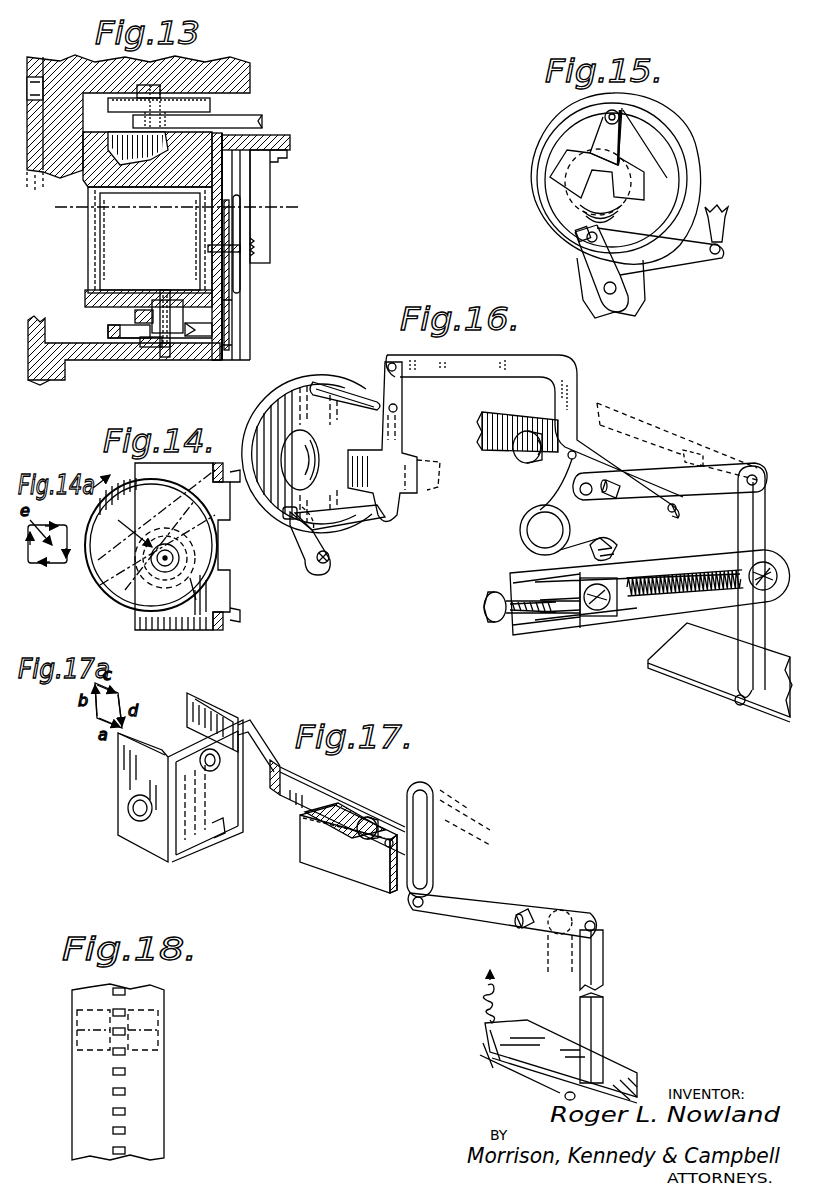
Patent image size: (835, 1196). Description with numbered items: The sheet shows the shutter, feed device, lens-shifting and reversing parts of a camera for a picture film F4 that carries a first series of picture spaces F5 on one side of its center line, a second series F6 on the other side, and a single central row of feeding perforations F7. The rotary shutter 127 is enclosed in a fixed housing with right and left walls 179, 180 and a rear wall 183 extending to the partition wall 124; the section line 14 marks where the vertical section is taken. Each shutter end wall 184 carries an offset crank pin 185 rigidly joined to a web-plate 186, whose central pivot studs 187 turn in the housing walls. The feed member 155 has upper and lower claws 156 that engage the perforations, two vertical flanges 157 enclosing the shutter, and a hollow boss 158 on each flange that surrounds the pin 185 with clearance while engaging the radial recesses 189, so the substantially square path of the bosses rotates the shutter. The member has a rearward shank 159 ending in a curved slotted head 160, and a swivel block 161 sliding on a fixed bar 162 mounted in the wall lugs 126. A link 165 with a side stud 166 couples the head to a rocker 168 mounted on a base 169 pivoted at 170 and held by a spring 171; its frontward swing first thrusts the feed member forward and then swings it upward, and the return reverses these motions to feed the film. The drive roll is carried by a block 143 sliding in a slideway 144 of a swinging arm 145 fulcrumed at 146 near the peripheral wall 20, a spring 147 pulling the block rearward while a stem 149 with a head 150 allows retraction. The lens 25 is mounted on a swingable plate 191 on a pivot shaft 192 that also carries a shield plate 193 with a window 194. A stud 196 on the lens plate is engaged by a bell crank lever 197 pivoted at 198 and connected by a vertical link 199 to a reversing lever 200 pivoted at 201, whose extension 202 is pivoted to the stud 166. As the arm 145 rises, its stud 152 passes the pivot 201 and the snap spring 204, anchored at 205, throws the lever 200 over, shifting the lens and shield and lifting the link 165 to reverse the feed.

In FIG. 13, the section line 14 is at (182, 207).
In FIG. 13, the peripheral wall 20 is at (57, 383).
In FIG. 15, the peripheral wall 20 is at (697, 183).
In FIG. 15, the lens 25 is at (610, 198).
In FIG. 16, the lens 25 is at (300, 460).
In FIG. 13, the partition wall 124 is at (290, 141).
In FIG. 17, the partition wall 124 is at (345, 865).
In FIG. 17, the wall lugs 126 is at (318, 842).
In FIG. 13, the rotary shutter 127 is at (88, 235).
In FIG. 14, the rotary shutter 127 is at (105, 598).
In FIG. 16, the block 143 is at (603, 610).
In FIG. 16, the slideway 144 is at (572, 618).
In FIG. 16, the swinging arm or carrier 145 is at (533, 640).
In FIG. 16, the fulcrum 146 is at (770, 590).
In FIG. 16, the spring 147 is at (622, 612).
In FIG. 16, the stem 149 is at (500, 616).
In FIG. 16, the head or button 150 is at (484, 610).
In FIG. 16, the stud 152 is at (618, 545).
In FIG. 17, the feed member 155 is at (188, 850).
In FIG. 13, the claws 156 is at (210, 247).
In FIG. 14, the claws 156 is at (238, 605).
In FIG. 17, the claws 156 is at (224, 835).
In FIG. 13, the vertical flanges 157 is at (135, 318).
In FIG. 14, the vertical flanges 157 is at (185, 617).
In FIG. 17, the vertical flanges 157 is at (218, 710).
In FIG. 13, the sleeve or hollow boss 158 is at (172, 330).
In FIG. 14, the sleeve or hollow boss 158 is at (190, 520).
In FIG. 17, the sleeve or hollow boss 158 is at (128, 810).
In FIG. 13, the shank 159 is at (240, 120).
In FIG. 16, the shank 159 is at (482, 428).
In FIG. 14, the shank 159 is at (196, 600).
In FIG. 17, the shank 159 is at (315, 780).
In FIG. 17, the curved slotted head 160 is at (430, 862).
In FIG. 16, the swivel block or lug 161 is at (520, 458).
In FIG. 17, the swivel block or lug 161 is at (372, 818).
In FIG. 17, the fixed bar 162 is at (322, 845).
In FIG. 16, the link 165 is at (735, 442).
In FIG. 17, the link 165 is at (455, 795).
In FIG. 16, the stud 166 is at (626, 490).
In FIG. 17, the stud 166 is at (518, 930).
In FIG. 16, the reciprocating member 168 is at (766, 538).
In FIG. 17, the reciprocating member 168 is at (603, 1003).
In FIG. 16, the base 169 is at (720, 672).
In FIG. 17, the base 169 is at (615, 1065).
In FIG. 16, the pivot 170 is at (734, 704).
In FIG. 17, the pivot 170 is at (562, 1096).
In FIG. 17, the spring 171 is at (484, 1008).
In FIG. 13, the right wall 179 is at (242, 80).
In FIG. 13, the left wall 180 is at (95, 360).
In FIG. 13, the rear wall 183 is at (225, 160).
In FIG. 13, the shutter end wall 184 is at (88, 298).
In FIG. 13, the offset pin 185 is at (185, 116).
In FIG. 14, the offset pin 185 is at (142, 592).
In FIG. 13, the web-plate 186 is at (118, 106).
In FIG. 14, the web-plate 186 is at (120, 555).
In FIG. 13, the pivot studs 187 is at (152, 357).
In FIG. 13, the radial recess 189 is at (215, 328).
In FIG. 14, the radial recess 189 is at (150, 600).
In FIG. 15, the swingable plate 191 is at (573, 128).
In FIG. 16, the swingable plate 191 is at (285, 398).
In FIG. 15, the pivot shaft 192 is at (620, 114).
In FIG. 16, the pivot shaft 192 is at (352, 384).
In FIG. 13, the shield plate 193 is at (235, 190).
In FIG. 15, the shield plate 193 is at (608, 138).
In FIG. 16, the shield plate 193 is at (362, 450).
In FIG. 15, the window 194 is at (588, 198).
In FIG. 15, the stud 196 is at (590, 240).
In FIG. 16, the stud 196 is at (287, 521).
In FIG. 15, the bell crank lever 197 is at (687, 267).
In FIG. 16, the bell crank lever 197 is at (348, 542).
In FIG. 15, the pivot 198 is at (604, 288).
In FIG. 16, the pivot 198 is at (322, 564).
In FIG. 15, the vertical link 199 is at (728, 220).
In FIG. 16, the vertical link 199 is at (389, 362).
In FIG. 16, the reversing lever 200 is at (553, 352).
In FIG. 16, the fulcrum or pivot 201 is at (615, 502).
In FIG. 16, the extension 202 is at (678, 518).
In FIG. 16, the snap spring 204 is at (520, 530).
In FIG. 16, the pivot 205 is at (565, 462).
In FIG. 18, the picture film F4 is at (165, 1100).
In FIG. 18, the first series of picture spaces F5 is at (77, 1038).
In FIG. 18, the second series of picture spaces F6 is at (152, 1043).
In FIG. 18, the feeding perforations F7 is at (113, 1130).